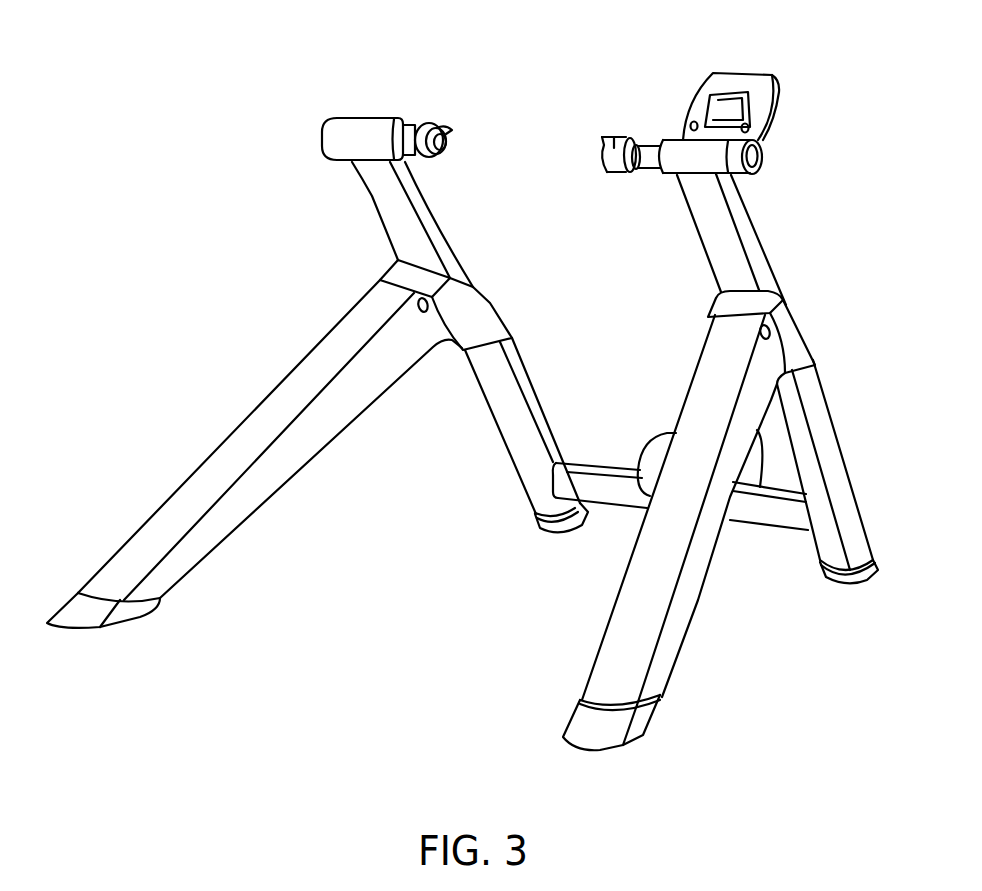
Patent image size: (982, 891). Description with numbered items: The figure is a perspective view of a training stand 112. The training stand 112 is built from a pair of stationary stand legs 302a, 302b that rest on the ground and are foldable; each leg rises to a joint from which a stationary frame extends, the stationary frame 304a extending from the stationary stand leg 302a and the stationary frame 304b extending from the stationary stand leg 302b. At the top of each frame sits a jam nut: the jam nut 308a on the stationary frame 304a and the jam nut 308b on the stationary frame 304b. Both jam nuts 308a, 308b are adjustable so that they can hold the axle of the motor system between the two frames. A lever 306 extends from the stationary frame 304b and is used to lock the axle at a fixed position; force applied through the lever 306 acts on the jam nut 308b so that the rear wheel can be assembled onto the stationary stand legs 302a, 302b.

The training stand 112 is at (278, 311).
The stationary stand leg 302a is at (185, 562).
The stationary stand leg 302b is at (617, 635).
The stationary frame 304a is at (370, 203).
The stationary frame 304b is at (738, 230).
The lever 306 is at (737, 83).
The jam nut 308a is at (424, 140).
The jam nut 308b is at (612, 153).